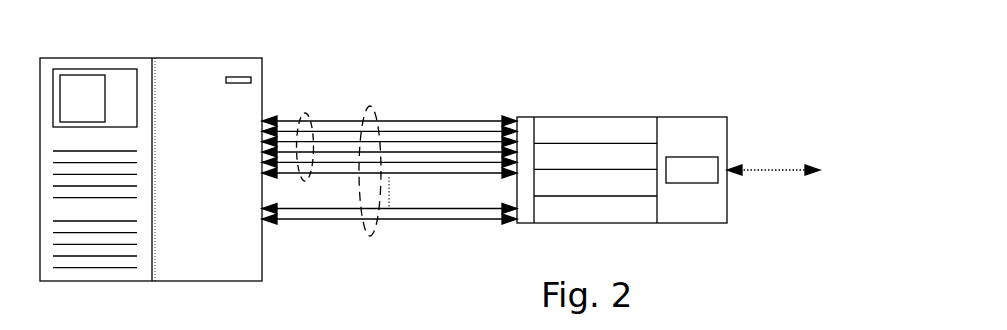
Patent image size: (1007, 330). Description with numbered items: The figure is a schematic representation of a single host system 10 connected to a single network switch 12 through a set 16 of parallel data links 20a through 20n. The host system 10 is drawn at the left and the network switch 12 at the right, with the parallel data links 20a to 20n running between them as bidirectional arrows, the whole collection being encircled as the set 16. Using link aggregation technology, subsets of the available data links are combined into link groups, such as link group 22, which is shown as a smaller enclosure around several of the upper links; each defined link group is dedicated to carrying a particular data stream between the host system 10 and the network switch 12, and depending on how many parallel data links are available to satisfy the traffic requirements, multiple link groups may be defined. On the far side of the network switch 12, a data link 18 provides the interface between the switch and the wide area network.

The host system 10 is at (152, 58).
The network switch 12 is at (623, 117).
The set of parallel data links 16 is at (370, 242).
The data link 18 is at (767, 168).
The parallel data link 20a is at (415, 120).
The parallel data link 20n is at (415, 218).
The link group 22 is at (303, 115).